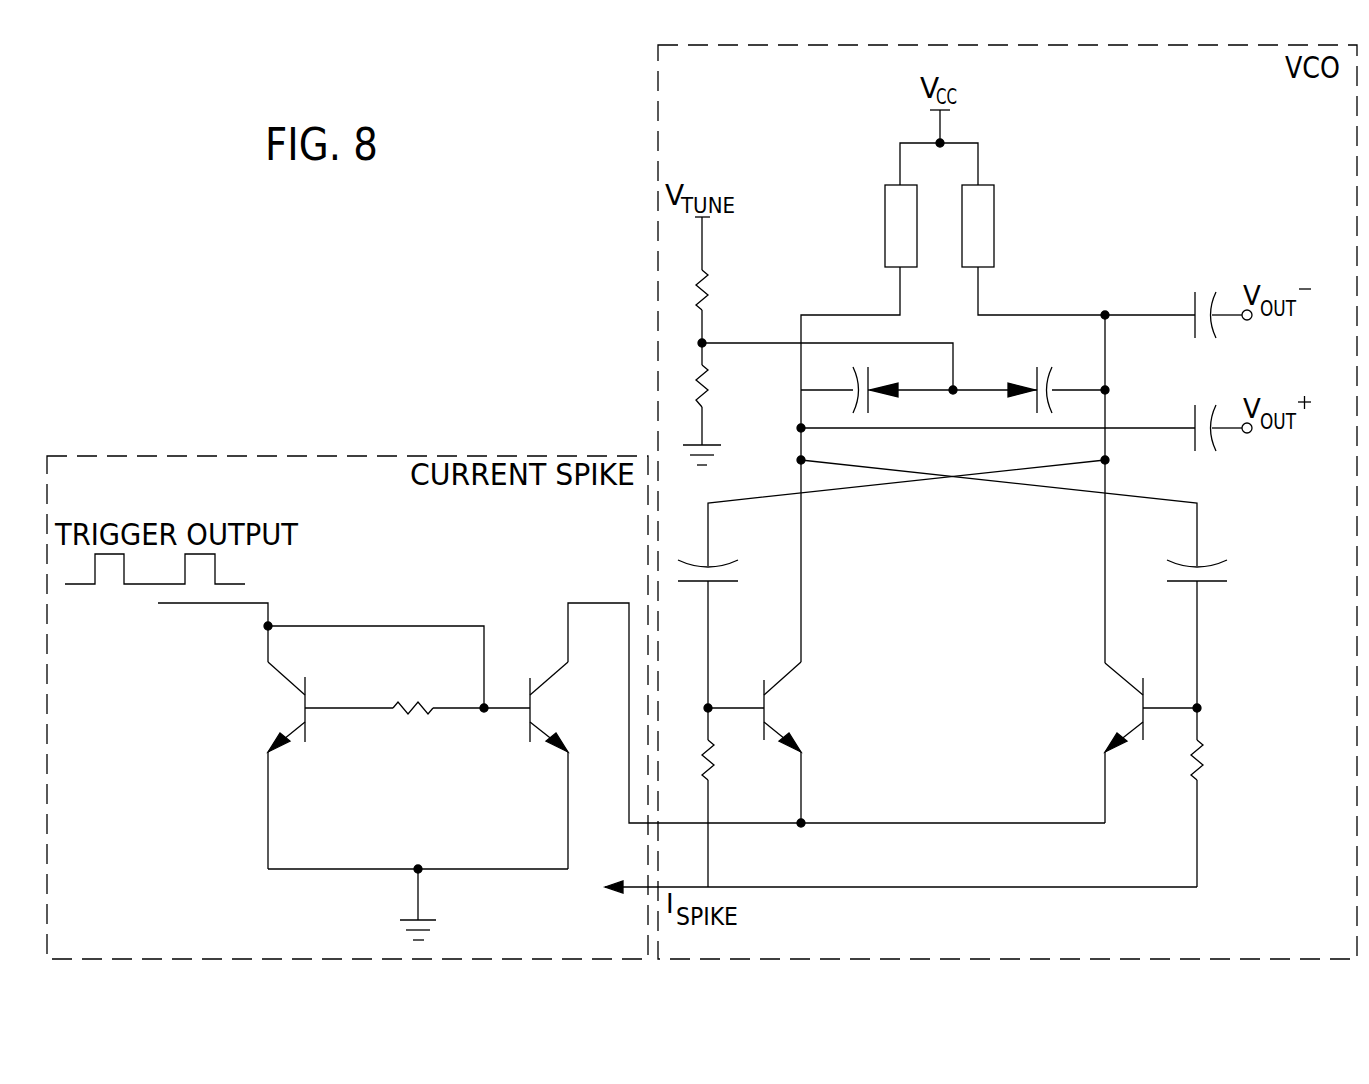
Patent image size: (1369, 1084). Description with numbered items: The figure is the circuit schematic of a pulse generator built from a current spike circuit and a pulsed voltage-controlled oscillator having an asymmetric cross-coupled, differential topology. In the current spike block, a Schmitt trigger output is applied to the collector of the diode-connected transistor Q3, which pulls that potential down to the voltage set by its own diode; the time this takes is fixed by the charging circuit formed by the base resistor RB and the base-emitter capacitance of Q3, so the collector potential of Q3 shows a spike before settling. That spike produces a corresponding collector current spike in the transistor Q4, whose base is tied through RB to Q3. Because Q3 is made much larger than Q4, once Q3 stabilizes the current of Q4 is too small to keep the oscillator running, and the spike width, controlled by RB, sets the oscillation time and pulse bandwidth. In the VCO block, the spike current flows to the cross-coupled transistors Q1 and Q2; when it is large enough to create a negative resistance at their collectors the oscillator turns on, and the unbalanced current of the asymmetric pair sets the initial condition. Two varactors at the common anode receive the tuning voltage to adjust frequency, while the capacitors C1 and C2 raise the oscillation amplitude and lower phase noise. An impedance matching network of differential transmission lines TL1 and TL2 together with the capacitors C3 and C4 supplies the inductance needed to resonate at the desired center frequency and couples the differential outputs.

The VCO transistor Q1 is at (798, 707).
The VCO transistor Q2 is at (1105, 707).
The diode-connected transistor Q3 is at (265, 707).
The current spike transistor Q4 is at (568, 707).
The capacitor C1 is at (729, 574).
The capacitor C2 is at (1223, 577).
The capacitor C3 is at (1217, 294).
The capacitor C4 is at (1217, 452).
The differential transmission line TL1 is at (875, 226).
The differential transmission line TL2 is at (1003, 226).
The base resistor RB is at (413, 689).